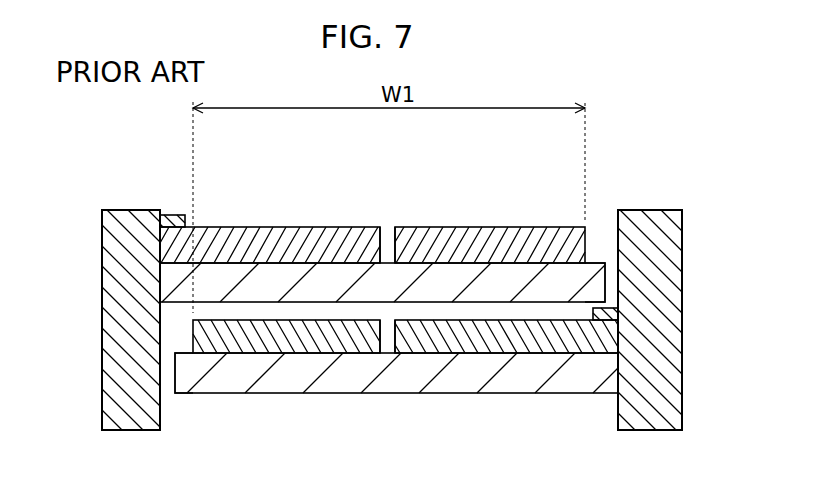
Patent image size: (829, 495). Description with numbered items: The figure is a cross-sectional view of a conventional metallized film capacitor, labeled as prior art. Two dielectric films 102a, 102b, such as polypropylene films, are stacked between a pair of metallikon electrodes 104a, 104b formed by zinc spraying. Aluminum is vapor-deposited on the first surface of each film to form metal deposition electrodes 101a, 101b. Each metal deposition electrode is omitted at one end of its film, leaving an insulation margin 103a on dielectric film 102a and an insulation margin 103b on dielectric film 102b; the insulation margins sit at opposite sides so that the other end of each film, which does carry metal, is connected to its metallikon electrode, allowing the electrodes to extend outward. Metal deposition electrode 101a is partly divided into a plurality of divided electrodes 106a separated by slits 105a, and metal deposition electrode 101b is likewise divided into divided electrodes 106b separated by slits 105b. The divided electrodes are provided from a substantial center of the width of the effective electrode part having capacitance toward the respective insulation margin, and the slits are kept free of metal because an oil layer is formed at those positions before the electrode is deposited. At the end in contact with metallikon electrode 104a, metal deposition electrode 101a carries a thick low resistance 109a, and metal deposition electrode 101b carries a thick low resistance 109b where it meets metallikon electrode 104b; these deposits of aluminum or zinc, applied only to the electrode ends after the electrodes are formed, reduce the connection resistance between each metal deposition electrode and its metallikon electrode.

The metal deposition electrode 101a is at (262, 250).
The metal deposition electrode 101b is at (472, 338).
The dielectric film 102a is at (336, 275).
The dielectric film 102b is at (325, 378).
The insulation margin 103a is at (591, 280).
The insulation margin 103b is at (198, 380).
The metallikon electrode 104a is at (123, 260).
The metallikon electrode 104b is at (643, 315).
The slit 105a is at (390, 240).
The slit 105b is at (389, 335).
The divided electrode 106a is at (494, 248).
The divided electrode 106b is at (282, 347).
The low resistance 109a is at (176, 222).
The low resistance 109b is at (603, 314).